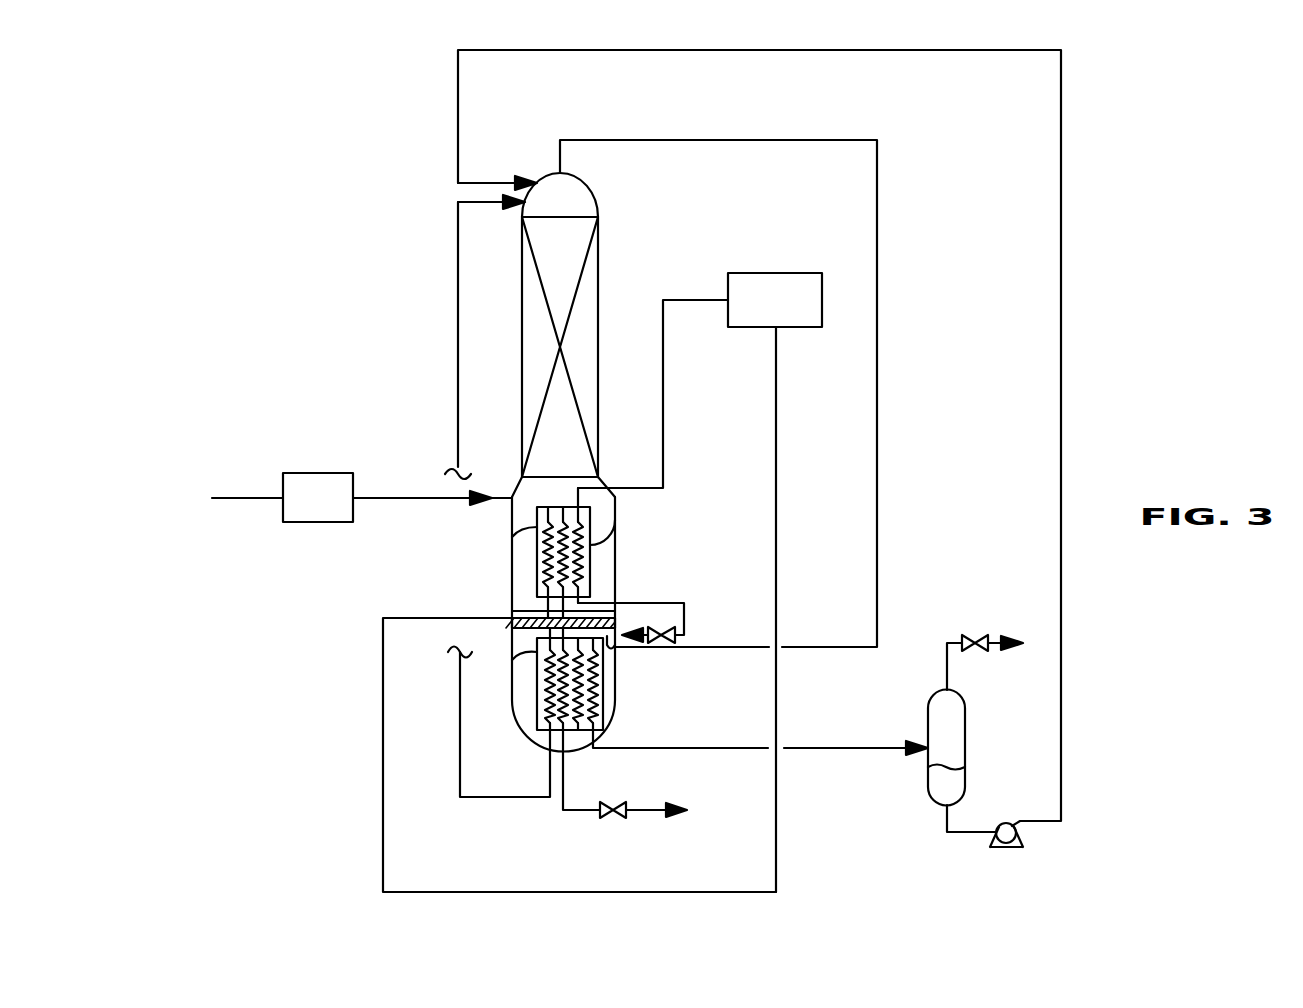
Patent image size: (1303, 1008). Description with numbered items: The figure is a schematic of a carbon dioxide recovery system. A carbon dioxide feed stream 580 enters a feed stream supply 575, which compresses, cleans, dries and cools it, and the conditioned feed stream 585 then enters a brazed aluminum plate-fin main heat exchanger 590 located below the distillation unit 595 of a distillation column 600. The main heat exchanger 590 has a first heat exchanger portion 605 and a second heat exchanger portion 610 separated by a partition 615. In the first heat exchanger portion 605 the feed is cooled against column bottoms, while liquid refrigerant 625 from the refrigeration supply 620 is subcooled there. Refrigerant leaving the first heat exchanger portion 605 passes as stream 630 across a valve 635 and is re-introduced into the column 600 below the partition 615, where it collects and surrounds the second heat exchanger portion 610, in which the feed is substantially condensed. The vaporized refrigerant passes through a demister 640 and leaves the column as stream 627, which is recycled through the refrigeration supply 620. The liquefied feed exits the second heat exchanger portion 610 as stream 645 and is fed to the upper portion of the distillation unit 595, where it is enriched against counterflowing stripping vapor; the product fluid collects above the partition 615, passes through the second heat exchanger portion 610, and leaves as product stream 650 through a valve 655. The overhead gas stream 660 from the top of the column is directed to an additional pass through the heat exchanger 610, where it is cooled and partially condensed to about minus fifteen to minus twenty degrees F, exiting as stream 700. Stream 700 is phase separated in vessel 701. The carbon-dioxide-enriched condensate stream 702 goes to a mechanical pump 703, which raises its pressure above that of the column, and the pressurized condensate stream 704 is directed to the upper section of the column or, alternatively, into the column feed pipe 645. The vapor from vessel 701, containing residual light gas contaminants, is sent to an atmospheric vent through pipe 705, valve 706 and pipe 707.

The feed stream supply 575 is at (299, 508).
The carbon dioxide feed stream 580 is at (250, 498).
The feed stream 585 is at (447, 498).
The main heat exchanger 590 is at (615, 577).
The distillation unit 595 is at (540, 464).
The distillation column 600 is at (617, 335).
The first heat exchanger portion 605 is at (537, 567).
The second heat exchanger portion 610 is at (537, 700).
The partition 615 is at (470, 657).
The refrigeration supply 620 is at (756, 310).
The liquid refrigerant 625 is at (665, 458).
The refrigerant recycle stream 627 is at (383, 830).
The refrigerant stream 630 is at (684, 625).
The valve 635 is at (655, 640).
The demister 640 is at (615, 652).
The column feed pipe 645 is at (460, 740).
The product stream 650 is at (568, 760).
The valve 655 is at (613, 818).
The overhead gas stream 660 is at (728, 140).
The stream 700 is at (710, 748).
The vessel 701 is at (928, 782).
The condensate stream 702 is at (947, 832).
The mechanical pump 703 is at (1010, 847).
The pressurized condensate stream 704 is at (1045, 821).
The pipe 705 is at (947, 672).
The valve 706 is at (975, 636).
The pipe 707 is at (1000, 650).